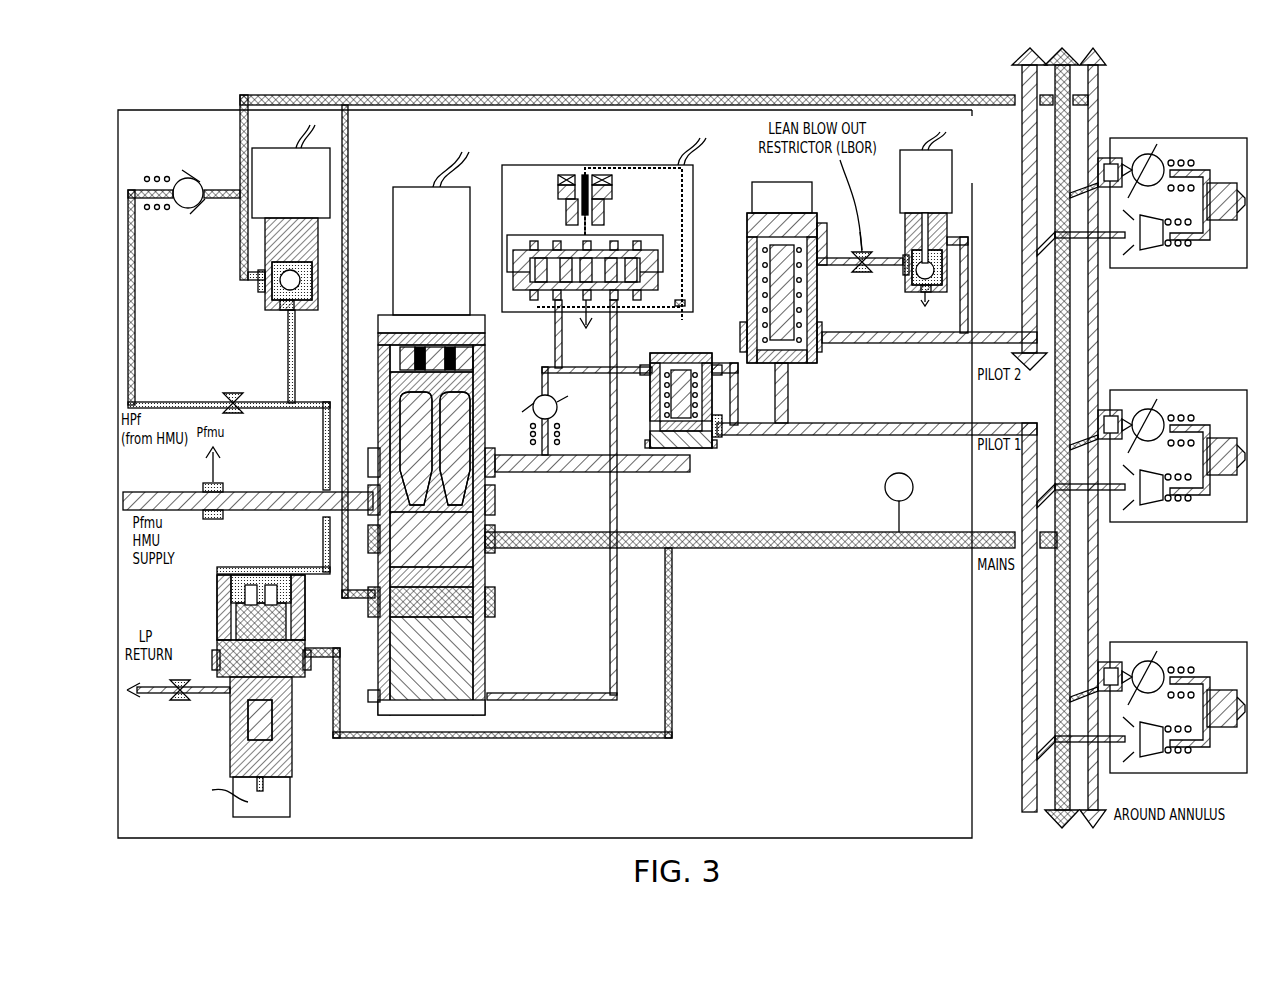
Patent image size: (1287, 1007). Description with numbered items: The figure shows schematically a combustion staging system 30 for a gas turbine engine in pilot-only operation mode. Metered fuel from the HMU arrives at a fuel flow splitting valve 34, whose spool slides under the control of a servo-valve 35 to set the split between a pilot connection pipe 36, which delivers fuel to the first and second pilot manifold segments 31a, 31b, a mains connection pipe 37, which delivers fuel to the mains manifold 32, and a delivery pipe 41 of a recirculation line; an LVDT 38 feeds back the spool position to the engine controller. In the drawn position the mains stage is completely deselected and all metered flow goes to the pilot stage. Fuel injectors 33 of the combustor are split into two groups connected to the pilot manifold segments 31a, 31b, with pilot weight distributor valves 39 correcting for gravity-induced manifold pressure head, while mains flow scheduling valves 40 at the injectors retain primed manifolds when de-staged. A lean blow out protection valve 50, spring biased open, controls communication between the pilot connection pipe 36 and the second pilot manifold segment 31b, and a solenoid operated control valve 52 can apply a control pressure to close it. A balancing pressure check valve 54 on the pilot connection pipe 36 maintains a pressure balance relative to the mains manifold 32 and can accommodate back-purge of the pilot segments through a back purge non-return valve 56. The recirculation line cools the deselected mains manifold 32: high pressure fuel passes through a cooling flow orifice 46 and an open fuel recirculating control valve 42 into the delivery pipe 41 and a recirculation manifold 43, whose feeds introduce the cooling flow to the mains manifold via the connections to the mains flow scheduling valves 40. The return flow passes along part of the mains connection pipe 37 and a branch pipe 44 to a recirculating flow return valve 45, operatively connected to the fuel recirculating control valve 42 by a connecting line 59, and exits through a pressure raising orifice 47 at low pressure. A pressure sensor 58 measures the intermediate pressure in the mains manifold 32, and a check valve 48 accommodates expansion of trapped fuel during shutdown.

The staging system 30 is at (608, 92).
The first pilot manifold segment 31a is at (1020, 645).
The second pilot manifold segment 31b is at (1021, 231).
The mains manifold 32 is at (1078, 330).
The fuel injectors 33 is at (1142, 186).
The fuel flow splitting valve 34 is at (377, 392).
The servo-valve 35 is at (508, 164).
The pilot connection pipe 36 is at (648, 470).
The mains connection pipe 37 is at (852, 550).
The LVDT 38 is at (449, 266).
The pilot weight distributor valves 39 is at (1150, 252).
The mains flow scheduling valves 40 is at (1144, 156).
The delivery pipe 41 is at (818, 94).
The fuel recirculating control valve 42 is at (263, 292).
The recirculation manifold 43 is at (1099, 572).
The branch pipe 44 is at (580, 740).
The recirculating flow return valve 45 is at (300, 778).
The cooling flow orifice 46 is at (230, 393).
The pressure raising orifice 47 is at (177, 704).
The check valve 48 is at (186, 211).
The lean blow out protection valve 50 is at (747, 252).
The solenoid operated control valve 52 is at (900, 255).
The balancing pressure check valve 54 is at (692, 353).
The back purge non-return valve 56 is at (558, 398).
The pressure sensor 58 is at (884, 489).
The connecting line 59 is at (322, 432).